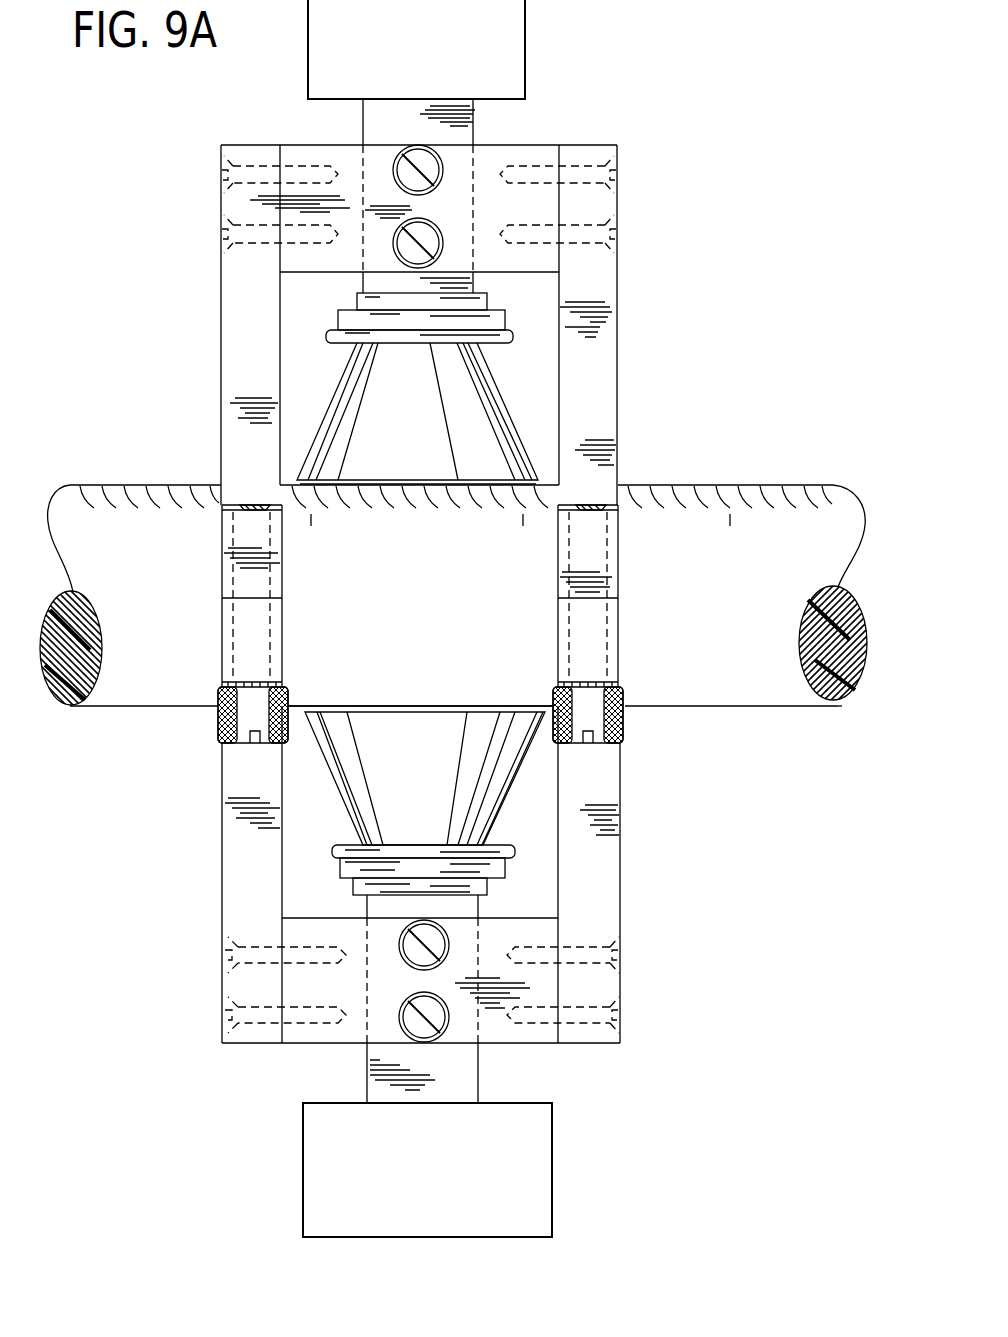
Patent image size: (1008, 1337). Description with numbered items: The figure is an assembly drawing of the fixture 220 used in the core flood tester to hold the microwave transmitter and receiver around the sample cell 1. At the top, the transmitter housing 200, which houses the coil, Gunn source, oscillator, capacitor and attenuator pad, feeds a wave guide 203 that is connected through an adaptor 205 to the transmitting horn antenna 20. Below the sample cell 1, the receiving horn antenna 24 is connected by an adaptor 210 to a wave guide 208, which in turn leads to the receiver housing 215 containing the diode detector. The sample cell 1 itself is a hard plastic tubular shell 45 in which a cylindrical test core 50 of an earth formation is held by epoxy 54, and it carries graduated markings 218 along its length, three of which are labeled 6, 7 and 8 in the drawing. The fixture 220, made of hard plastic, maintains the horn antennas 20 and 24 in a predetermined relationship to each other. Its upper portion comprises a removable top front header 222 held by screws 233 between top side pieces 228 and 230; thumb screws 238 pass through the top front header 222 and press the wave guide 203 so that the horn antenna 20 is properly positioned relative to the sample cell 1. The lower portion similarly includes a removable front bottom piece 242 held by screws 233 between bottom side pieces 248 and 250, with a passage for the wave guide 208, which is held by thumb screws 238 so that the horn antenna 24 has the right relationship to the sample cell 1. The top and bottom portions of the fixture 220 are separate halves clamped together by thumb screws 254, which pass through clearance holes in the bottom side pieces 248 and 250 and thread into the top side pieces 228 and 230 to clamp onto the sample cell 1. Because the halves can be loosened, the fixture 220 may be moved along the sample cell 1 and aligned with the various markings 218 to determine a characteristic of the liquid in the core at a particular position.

The sample cell 1 is at (724, 707).
The position mark 6 is at (308, 531).
The position mark 7 is at (520, 531).
The position mark 8 is at (727, 530).
The horn antenna 20 is at (404, 430).
The horn antenna 24 is at (404, 767).
The tubular shell 45 is at (778, 683).
The test core 50 is at (822, 620).
The epoxy 54 is at (833, 700).
The transmitter housing 200 is at (416, 49).
The wave guide 203 is at (476, 115).
The adaptor 205 is at (346, 318).
The wave guide 208 is at (470, 1070).
The adaptor 210 is at (375, 883).
The receiver housing 215 is at (427, 1170).
The graduated markings 218 is at (684, 484).
The fixture 220 is at (676, 394).
The top front header 222 is at (345, 152).
The top side piece 228 is at (232, 375).
The top side piece 230 is at (600, 325).
The screws 233 is at (618, 975).
The thumb screws 238 is at (432, 237).
The front bottom piece 242 is at (334, 1036).
The bottom side piece 248 is at (232, 855).
The bottom side piece 250 is at (607, 862).
The thumb screws 254 is at (218, 732).